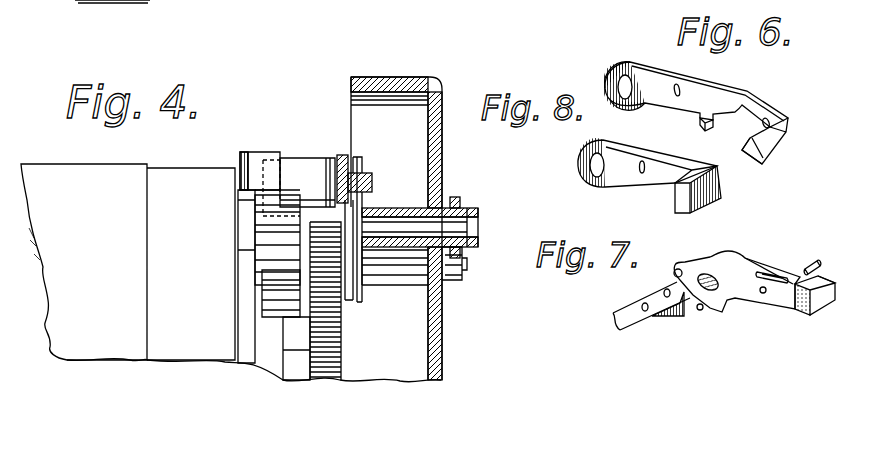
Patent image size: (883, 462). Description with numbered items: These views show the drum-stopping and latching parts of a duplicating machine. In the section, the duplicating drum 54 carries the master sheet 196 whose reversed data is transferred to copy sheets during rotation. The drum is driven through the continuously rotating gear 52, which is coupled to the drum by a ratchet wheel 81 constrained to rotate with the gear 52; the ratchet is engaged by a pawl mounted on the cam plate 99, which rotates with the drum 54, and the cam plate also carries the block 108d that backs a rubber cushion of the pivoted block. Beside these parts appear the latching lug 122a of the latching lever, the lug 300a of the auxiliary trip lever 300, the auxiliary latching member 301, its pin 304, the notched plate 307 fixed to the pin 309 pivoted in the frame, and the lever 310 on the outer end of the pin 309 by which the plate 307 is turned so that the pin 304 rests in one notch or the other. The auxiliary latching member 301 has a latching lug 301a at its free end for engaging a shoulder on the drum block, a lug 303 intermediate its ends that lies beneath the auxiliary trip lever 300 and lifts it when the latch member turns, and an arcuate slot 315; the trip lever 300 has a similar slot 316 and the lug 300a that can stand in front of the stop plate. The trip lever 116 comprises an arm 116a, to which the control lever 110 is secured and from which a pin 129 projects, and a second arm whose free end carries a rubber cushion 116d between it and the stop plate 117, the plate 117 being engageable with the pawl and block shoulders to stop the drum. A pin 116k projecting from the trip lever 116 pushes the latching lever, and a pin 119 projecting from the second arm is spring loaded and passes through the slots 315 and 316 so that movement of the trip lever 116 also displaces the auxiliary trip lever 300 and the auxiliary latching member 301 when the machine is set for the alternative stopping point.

In FIG. 4, the master sheet 196 is at (58, 175).
In FIG. 4, the duplicating drum 54 is at (162, 182).
In FIG. 4, the latching lug 122a is at (250, 152).
In FIG. 4, the laterally projecting lug 300a is at (290, 158).
In FIG. 6, the laterally projecting lug 300a is at (692, 207).
In FIG. 4, the auxiliary latching member 301 is at (340, 155).
In FIG. 6, the auxiliary latching member 301 is at (728, 112).
In FIG. 4, the pin 304 is at (366, 178).
In FIG. 6, the pin 304 is at (770, 120).
In FIG. 4, the pin 309 is at (385, 225).
In FIG. 4, the lever 310 is at (452, 198).
In FIG. 4, the block 108d is at (248, 247).
In FIG. 4, the cam plate 99 is at (240, 322).
In FIG. 4, the ratchet wheel 81 is at (294, 368).
In FIG. 4, the plate 307 is at (360, 300).
In FIG. 4, the gear 52 is at (330, 350).
In FIG. 6, the arcuate slot 315 is at (700, 91).
In FIG. 6, the lug 303 is at (699, 124).
In FIG. 6, the latching lug 301a is at (770, 148).
In FIG. 6, the auxiliary trip lever 300 is at (677, 184).
In FIG. 6, the slot 316 is at (642, 173).
In FIG. 7, the trip lever 116 is at (732, 299).
In FIG. 7, the pin 116k is at (665, 274).
In FIG. 7, the arm 116a is at (675, 318).
In FIG. 7, the rubber cushion 116d is at (830, 280).
In FIG. 7, the stop plate 117 is at (822, 303).
In FIG. 7, the pin 119 is at (808, 265).
In FIG. 7, the pin 129 is at (705, 312).
In FIG. 7, the control lever 110 is at (622, 310).